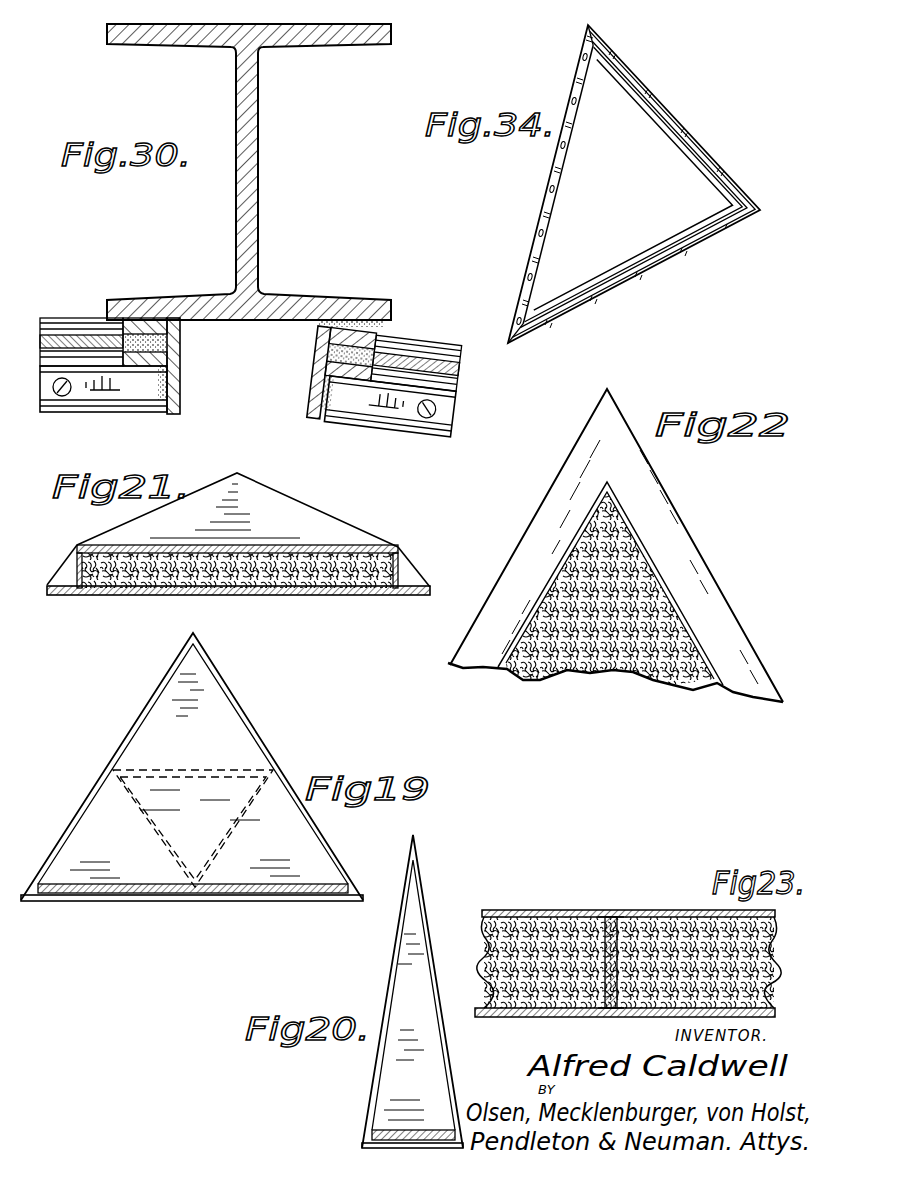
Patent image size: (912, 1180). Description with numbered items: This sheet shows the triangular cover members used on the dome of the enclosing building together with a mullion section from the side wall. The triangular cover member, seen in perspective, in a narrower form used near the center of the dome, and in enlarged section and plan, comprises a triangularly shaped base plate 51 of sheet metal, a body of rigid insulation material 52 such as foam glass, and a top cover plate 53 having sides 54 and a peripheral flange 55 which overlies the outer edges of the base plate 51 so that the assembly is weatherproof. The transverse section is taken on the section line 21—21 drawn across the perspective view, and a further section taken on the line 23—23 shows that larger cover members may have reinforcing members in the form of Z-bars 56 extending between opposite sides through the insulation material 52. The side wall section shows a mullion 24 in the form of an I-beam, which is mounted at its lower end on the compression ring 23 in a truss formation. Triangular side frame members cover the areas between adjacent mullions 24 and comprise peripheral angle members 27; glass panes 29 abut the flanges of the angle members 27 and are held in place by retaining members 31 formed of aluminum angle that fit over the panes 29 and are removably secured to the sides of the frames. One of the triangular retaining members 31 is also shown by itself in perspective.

In FIG. 19, the section line 21— 21 is at (78, 778).
In FIG. 19, the compression ring 23 is at (178, 832).
In FIG. 30, the mullion 24 is at (261, 179).
In FIG. 30, the peripheral angle member 27 is at (318, 354).
In FIG. 30, the glass pane 29 is at (80, 342).
In FIG. 30, the retaining member 31 is at (156, 382).
In FIG. 34, the retaining member 31 is at (672, 110).
In FIG. 21, the base plate 51 is at (92, 596).
In FIG. 19, the base plate 51 is at (267, 902).
In FIG. 23, the base plate 51 is at (508, 1013).
In FIG. 21, the insulation material 52 is at (276, 575).
In FIG. 22, the insulation material 52 is at (613, 673).
In FIG. 19, the insulation material 52 is at (257, 810).
In FIG. 23, the insulation material 52 is at (530, 920).
In FIG. 21, the top cover plate 53 is at (310, 528).
In FIG. 19, the top cover plate 53 is at (237, 742).
In FIG. 20, the top cover plate 53 is at (408, 930).
In FIG. 23, the top cover plate 53 is at (680, 913).
In FIG. 21, the side 54 is at (395, 574).
In FIG. 22, the side 54 is at (660, 573).
In FIG. 21, the peripheral flange 55 is at (413, 586).
In FIG. 22, the peripheral flange 55 is at (708, 590).
In FIG. 20, the peripheral flange 55 is at (369, 1115).
In FIG. 23, the Z-bar 56 is at (612, 917).